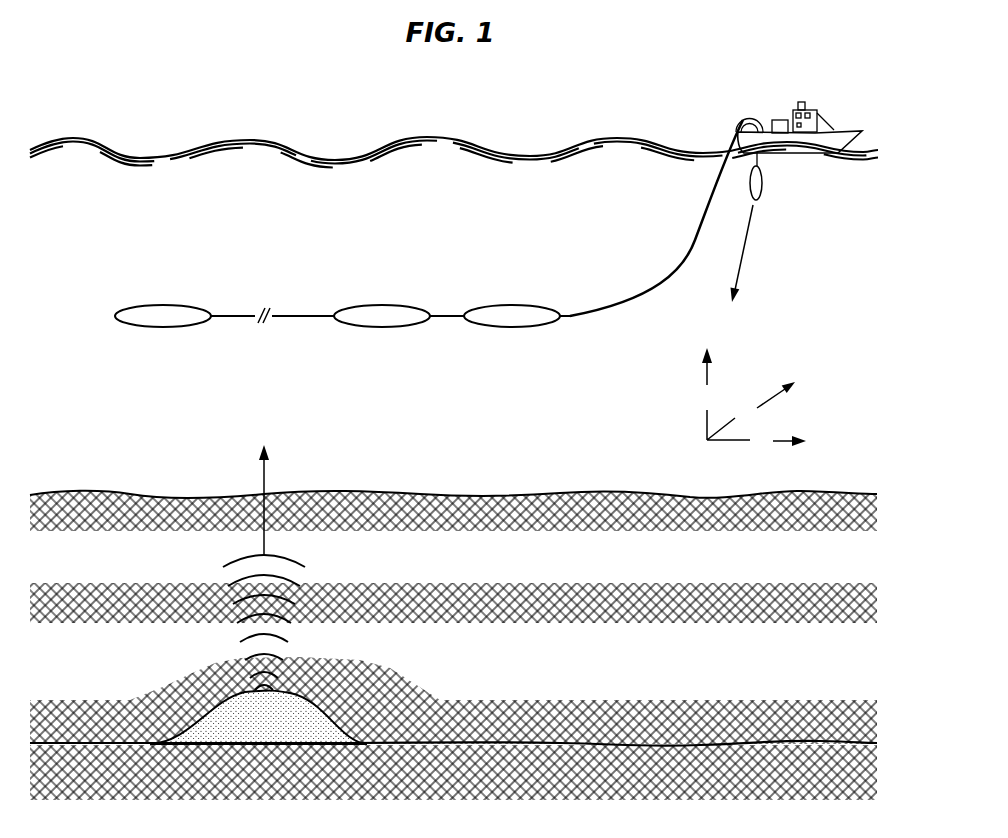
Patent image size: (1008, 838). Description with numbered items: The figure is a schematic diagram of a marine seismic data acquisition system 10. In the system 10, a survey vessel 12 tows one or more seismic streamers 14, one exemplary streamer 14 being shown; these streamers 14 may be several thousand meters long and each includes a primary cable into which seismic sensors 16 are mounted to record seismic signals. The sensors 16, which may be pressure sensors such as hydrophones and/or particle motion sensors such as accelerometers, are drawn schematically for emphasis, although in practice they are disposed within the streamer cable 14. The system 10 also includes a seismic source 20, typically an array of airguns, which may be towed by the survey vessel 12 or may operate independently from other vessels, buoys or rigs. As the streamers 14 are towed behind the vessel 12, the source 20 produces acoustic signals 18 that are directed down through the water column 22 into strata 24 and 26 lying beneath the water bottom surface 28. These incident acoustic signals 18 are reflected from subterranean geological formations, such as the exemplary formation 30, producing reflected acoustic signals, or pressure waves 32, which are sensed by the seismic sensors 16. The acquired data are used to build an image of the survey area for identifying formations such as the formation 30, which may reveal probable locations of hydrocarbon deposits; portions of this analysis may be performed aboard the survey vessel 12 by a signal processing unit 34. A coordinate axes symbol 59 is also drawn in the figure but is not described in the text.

The marine seismic data acquisition system 10 is at (213, 102).
The survey vessel 12 is at (847, 128).
The seismic streamer 14 is at (701, 223).
The seismic sensors 16 is at (140, 305).
The acoustic signals 18 is at (748, 240).
The seismic source 20 is at (762, 185).
The water column 22 is at (122, 405).
The stratum 24 is at (381, 730).
The stratum 26 is at (411, 785).
The water bottom surface 28 is at (432, 491).
The geological formation 30 is at (246, 730).
The pressure waves 32 is at (224, 643).
The signal processing unit 34 is at (776, 119).
The coordinate system 59 is at (697, 447).